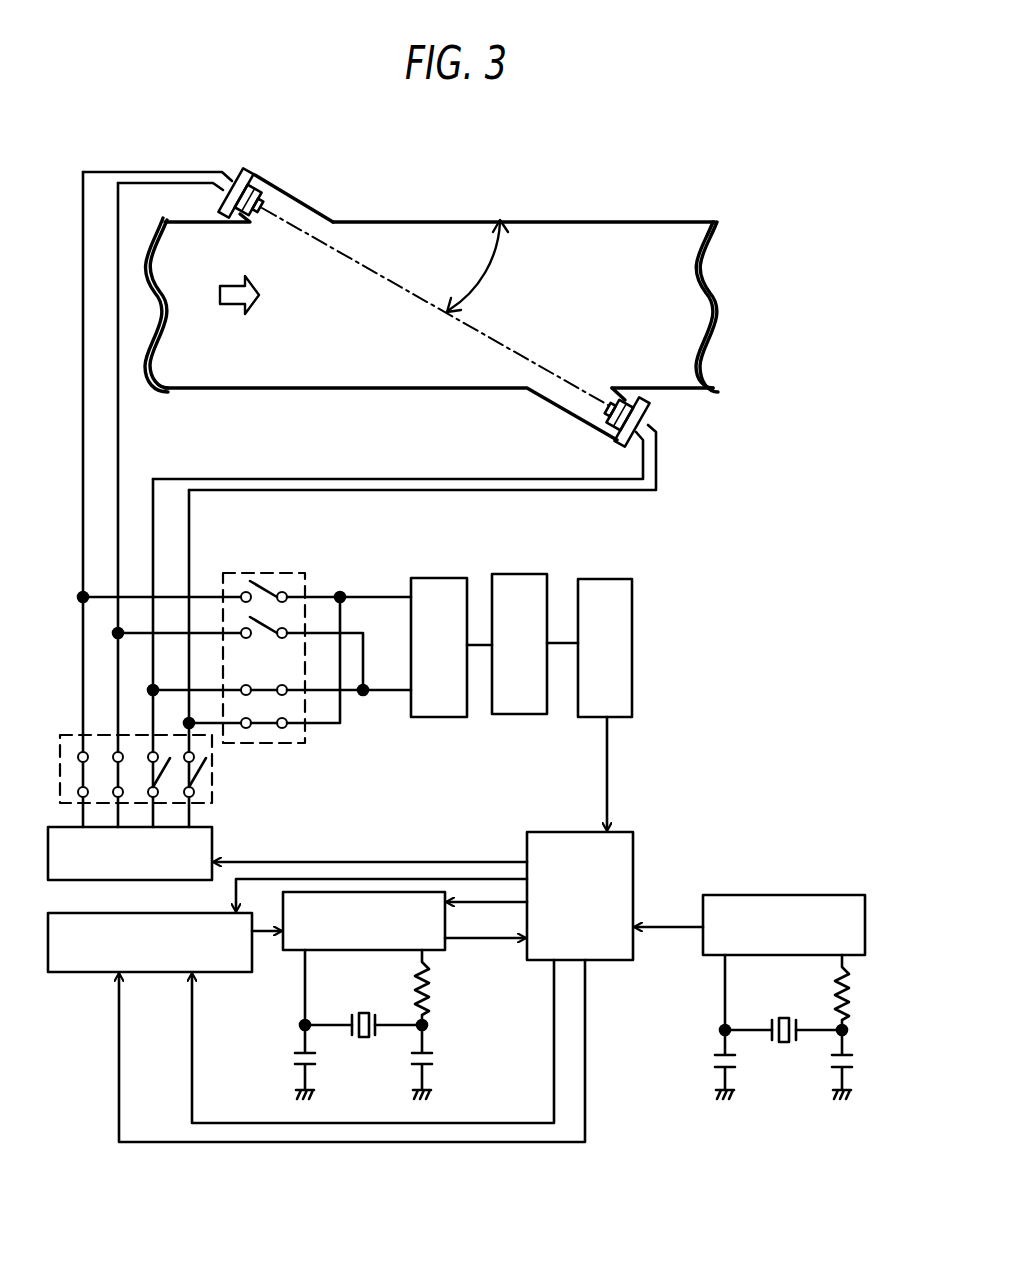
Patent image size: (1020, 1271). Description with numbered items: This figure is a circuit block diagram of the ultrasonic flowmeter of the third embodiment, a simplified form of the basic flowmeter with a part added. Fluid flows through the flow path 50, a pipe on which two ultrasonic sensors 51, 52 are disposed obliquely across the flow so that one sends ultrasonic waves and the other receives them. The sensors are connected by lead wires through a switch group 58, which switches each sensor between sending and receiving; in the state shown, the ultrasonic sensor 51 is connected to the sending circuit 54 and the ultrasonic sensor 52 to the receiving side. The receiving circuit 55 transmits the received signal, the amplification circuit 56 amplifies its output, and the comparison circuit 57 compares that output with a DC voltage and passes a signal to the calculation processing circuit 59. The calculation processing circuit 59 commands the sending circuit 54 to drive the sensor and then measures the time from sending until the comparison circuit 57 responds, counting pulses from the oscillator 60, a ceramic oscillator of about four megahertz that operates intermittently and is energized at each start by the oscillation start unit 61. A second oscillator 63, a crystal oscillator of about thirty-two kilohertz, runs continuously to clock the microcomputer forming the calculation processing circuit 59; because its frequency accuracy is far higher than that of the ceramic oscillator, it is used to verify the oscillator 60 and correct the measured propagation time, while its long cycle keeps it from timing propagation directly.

The flow path 50 is at (530, 221).
The ultrasonic sensor 51 is at (246, 168).
The ultrasonic sensor 52 is at (657, 424).
The sending circuit 54 is at (213, 831).
The receiving circuit 55 is at (438, 575).
The amplification circuit 56 is at (523, 574).
The comparison circuit 57 is at (606, 578).
The switch group 58 is at (213, 785).
The calculation processing circuit 59 is at (634, 849).
The oscillator 60 is at (366, 1040).
The oscillation start unit 61 is at (58, 975).
The oscillator 63 is at (787, 1045).